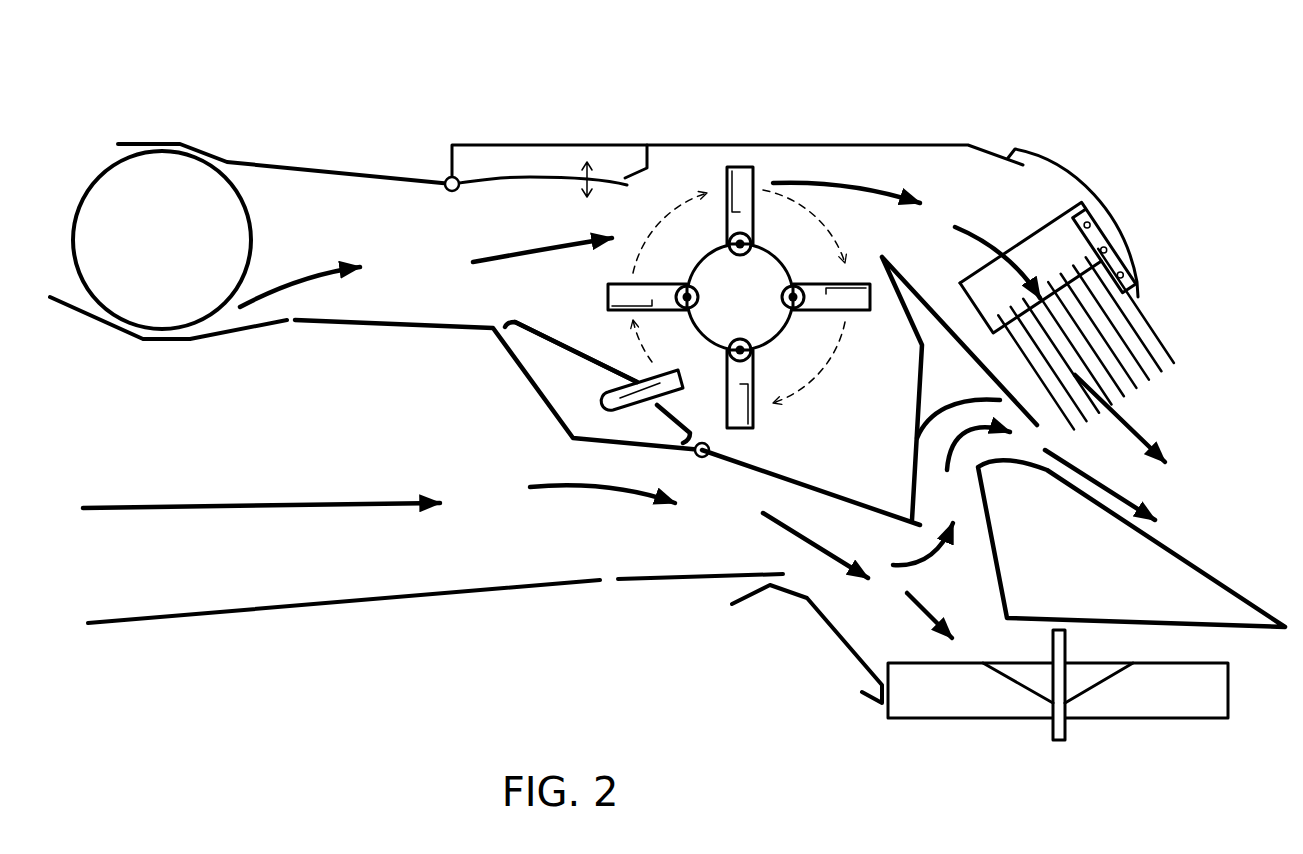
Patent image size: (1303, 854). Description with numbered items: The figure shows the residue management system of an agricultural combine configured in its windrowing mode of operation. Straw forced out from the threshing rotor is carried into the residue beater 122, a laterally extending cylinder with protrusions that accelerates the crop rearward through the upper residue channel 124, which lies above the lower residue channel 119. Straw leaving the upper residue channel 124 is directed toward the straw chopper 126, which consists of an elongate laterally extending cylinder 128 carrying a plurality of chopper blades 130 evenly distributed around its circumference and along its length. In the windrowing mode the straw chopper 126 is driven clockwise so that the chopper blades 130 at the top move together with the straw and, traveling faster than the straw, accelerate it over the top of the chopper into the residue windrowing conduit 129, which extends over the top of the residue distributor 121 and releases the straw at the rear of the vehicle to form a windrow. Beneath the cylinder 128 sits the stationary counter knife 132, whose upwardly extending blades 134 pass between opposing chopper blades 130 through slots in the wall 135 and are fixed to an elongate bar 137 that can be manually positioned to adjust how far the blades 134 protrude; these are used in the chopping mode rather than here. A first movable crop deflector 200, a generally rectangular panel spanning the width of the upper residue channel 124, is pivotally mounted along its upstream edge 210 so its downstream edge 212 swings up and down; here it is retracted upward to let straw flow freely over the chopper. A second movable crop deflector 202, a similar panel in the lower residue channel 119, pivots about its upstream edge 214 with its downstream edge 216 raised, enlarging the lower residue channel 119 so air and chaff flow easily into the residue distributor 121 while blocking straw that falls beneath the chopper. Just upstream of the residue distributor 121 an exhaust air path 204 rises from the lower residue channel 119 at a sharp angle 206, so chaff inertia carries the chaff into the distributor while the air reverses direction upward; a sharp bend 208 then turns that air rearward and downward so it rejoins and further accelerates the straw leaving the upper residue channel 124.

The lower residue channel 119 is at (290, 475).
The residue distributor 121 is at (1038, 733).
The residue beater 122 is at (250, 210).
The upper residue channel 124 is at (372, 232).
The straw chopper 126 is at (787, 227).
The cylinder 128 is at (722, 308).
The residue windrowing conduit 129 is at (887, 170).
The chopper blades 130 is at (740, 182).
The stationary counter knife 132 is at (615, 392).
The blades 134 is at (576, 352).
The wall 135 is at (577, 342).
The elongate bar 137 is at (615, 408).
The first movable crop deflector 200 is at (523, 175).
The second movable crop deflector 202 is at (797, 480).
The exhaust air path 204 is at (970, 447).
The sharp angle 206 is at (863, 507).
The sharp bend 208 is at (955, 424).
The upstream edge 210 is at (450, 192).
The downstream edge 212 is at (616, 178).
The upstream edge 214 is at (702, 457).
The downstream edge 216 is at (905, 520).